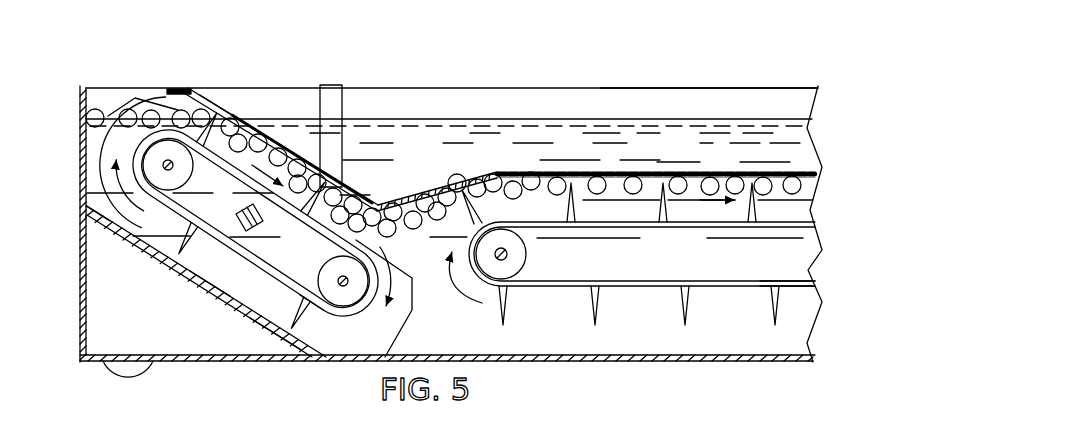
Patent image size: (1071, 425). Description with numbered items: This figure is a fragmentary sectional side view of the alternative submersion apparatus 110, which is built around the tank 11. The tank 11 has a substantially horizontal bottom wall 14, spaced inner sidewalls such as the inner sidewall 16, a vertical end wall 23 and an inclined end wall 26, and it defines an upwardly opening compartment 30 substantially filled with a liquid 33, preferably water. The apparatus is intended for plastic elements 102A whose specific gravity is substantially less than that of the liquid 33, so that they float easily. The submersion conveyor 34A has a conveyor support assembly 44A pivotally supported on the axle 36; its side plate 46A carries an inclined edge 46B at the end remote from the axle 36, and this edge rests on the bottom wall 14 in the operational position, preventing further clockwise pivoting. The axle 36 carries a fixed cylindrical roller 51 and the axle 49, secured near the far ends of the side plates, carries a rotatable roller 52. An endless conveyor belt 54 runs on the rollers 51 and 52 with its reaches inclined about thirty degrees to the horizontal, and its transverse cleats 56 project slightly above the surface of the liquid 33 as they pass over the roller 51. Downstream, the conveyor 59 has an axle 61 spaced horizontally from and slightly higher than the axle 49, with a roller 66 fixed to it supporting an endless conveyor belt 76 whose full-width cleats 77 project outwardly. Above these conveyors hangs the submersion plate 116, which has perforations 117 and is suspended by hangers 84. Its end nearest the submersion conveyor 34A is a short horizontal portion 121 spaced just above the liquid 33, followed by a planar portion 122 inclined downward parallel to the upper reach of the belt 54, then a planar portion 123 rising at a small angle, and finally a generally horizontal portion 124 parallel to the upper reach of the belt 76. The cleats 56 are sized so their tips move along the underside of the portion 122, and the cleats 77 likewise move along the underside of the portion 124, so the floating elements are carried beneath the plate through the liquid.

The tank 11 is at (422, 244).
The bottom wall 14 is at (705, 365).
The inner sidewall 16 is at (583, 100).
The vertical end wall 23 is at (80, 256).
The inclined end wall 26 is at (270, 333).
The compartment 30 is at (750, 100).
The liquid 33 is at (477, 133).
The submersion conveyor 34A is at (97, 207).
The axle 36 is at (165, 166).
The conveyor support assembly 44A is at (177, 303).
The side plate 46A is at (237, 259).
The inclined edge 46B is at (347, 360).
The axle 49 is at (338, 290).
The cylindrical roller 51 is at (110, 153).
The cylindrical roller 52 is at (404, 318).
The endless conveyor belt 54 is at (205, 290).
The cleats 56 is at (156, 254).
The conveyor 59 is at (653, 292).
The axle 61 is at (508, 258).
The cylindrical roller 66 is at (530, 314).
The endless conveyor belt 76 is at (797, 287).
The cleats 77 is at (777, 308).
The hangers 84 is at (346, 104).
The plastic elements 102A is at (165, 98).
The submersion apparatus 110 is at (414, 74).
The submersion plate 116 is at (226, 104).
The perforations 117 is at (648, 167).
The horizontal portion 121 is at (185, 88).
The planar portion 122 is at (272, 105).
The planar portion 123 is at (417, 196).
The horizontal portion 124 is at (656, 111).